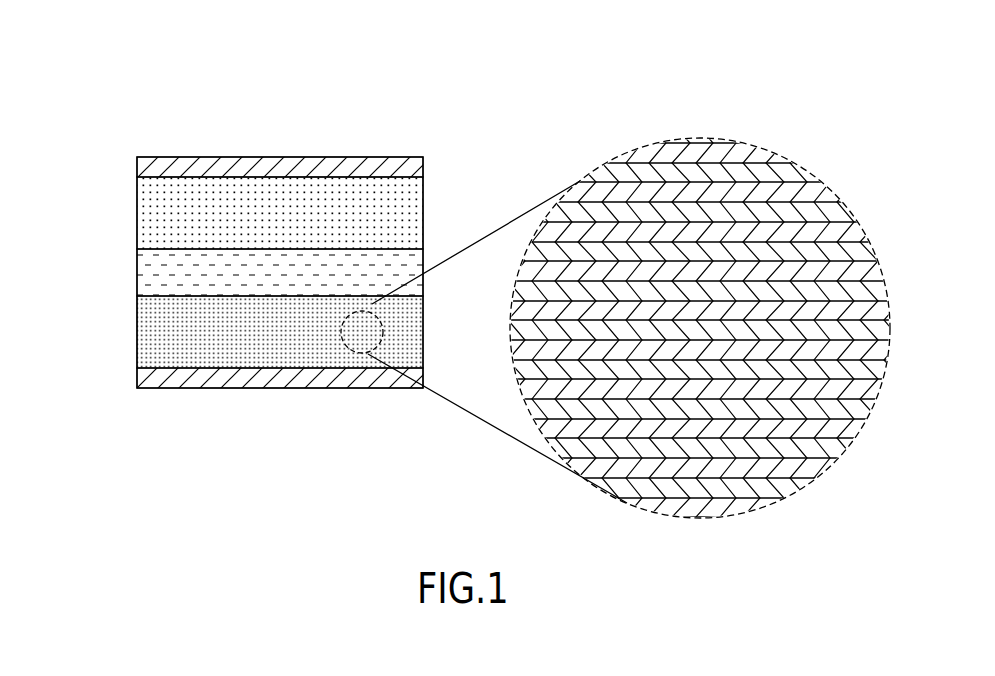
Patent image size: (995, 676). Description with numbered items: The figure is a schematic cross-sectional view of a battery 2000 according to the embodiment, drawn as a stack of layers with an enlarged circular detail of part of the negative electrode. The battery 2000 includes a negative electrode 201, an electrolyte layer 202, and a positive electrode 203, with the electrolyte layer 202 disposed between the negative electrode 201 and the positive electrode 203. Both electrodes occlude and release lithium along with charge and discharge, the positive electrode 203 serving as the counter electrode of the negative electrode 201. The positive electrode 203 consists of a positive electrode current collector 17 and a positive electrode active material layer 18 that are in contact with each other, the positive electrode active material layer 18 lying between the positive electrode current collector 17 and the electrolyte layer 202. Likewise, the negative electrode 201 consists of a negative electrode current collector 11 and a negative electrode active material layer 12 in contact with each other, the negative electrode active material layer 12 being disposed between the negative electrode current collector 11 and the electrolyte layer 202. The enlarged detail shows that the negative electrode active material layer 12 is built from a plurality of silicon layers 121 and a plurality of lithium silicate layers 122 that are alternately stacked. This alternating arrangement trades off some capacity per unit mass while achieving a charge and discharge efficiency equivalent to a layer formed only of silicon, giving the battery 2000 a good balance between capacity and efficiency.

The battery 2000 is at (408, 29).
The positive electrode 203 is at (215, 200).
The positive electrode current collector 17 is at (153, 164).
The positive electrode active material layer 18 is at (160, 217).
The electrolyte layer 202 is at (157, 273).
The negative electrode 201 is at (317, 342).
The negative electrode active material layer 12 is at (157, 328).
The negative electrode current collector 11 is at (157, 377).
The silicon layer 121 is at (852, 405).
The lithium silicate layer 122 is at (848, 432).